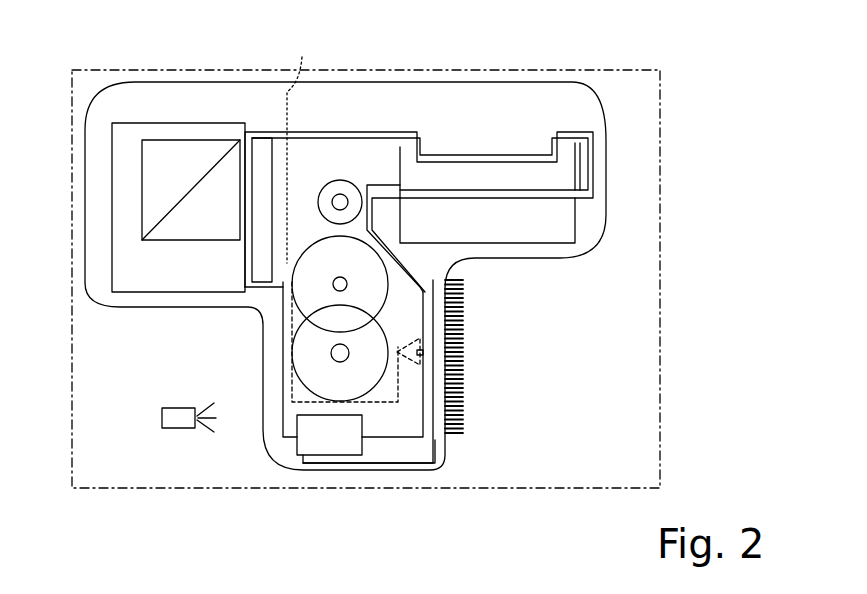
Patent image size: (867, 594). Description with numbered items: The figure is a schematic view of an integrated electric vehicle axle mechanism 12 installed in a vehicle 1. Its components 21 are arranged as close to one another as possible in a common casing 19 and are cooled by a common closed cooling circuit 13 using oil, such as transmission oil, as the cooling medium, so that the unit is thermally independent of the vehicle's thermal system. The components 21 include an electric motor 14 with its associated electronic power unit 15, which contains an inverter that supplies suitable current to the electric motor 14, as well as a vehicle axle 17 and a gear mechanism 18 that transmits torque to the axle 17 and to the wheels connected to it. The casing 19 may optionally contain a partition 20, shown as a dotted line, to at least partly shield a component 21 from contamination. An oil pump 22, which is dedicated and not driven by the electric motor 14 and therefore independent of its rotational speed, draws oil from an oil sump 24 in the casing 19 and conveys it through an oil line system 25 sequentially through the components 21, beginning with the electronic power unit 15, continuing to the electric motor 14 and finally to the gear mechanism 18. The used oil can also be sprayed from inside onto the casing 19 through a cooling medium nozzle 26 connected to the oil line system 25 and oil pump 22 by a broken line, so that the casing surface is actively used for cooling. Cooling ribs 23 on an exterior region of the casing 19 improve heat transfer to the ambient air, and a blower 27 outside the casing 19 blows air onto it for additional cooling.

The vehicle 1 is at (72, 158).
The electric vehicle axle mechanism 12 is at (616, 200).
The cooling circuit 13 is at (360, 132).
The electric motor 14 is at (500, 140).
The electronic power unit 15 is at (108, 230).
The vehicle axle 17 is at (331, 353).
The gear mechanism 18 is at (332, 306).
The casing 19 is at (601, 132).
The partition 20 is at (301, 146).
The components 21 is at (138, 120).
The oil pump 22 is at (327, 445).
The cooling ribs 23 is at (469, 337).
The oil sump 24 is at (397, 455).
The oil line system 25 is at (286, 300).
The cooling medium nozzle 26 is at (428, 354).
The blower 27 is at (162, 420).